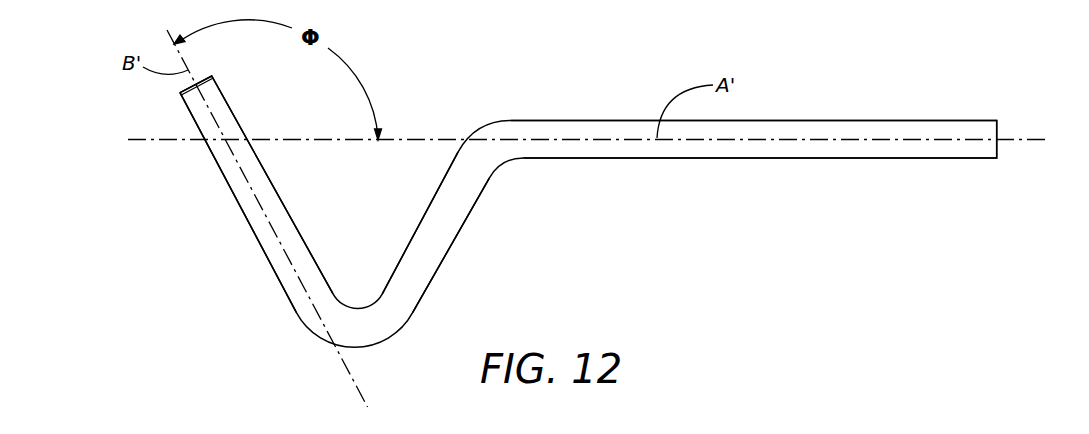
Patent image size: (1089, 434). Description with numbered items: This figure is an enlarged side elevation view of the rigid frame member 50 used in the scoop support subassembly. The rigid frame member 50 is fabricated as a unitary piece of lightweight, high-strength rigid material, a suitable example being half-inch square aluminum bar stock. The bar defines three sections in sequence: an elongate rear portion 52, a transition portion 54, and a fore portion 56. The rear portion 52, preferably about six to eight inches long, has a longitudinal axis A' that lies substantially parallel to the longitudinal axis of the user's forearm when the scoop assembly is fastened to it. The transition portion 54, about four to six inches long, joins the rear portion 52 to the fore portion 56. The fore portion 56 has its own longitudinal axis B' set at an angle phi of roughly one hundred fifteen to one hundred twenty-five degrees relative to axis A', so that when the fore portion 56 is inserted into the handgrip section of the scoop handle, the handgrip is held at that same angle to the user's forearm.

The rigid frame member 50 is at (588, 209).
The elongate rear portion 52 is at (837, 150).
The transition portion 54 is at (448, 228).
The fore portion 56 is at (270, 256).